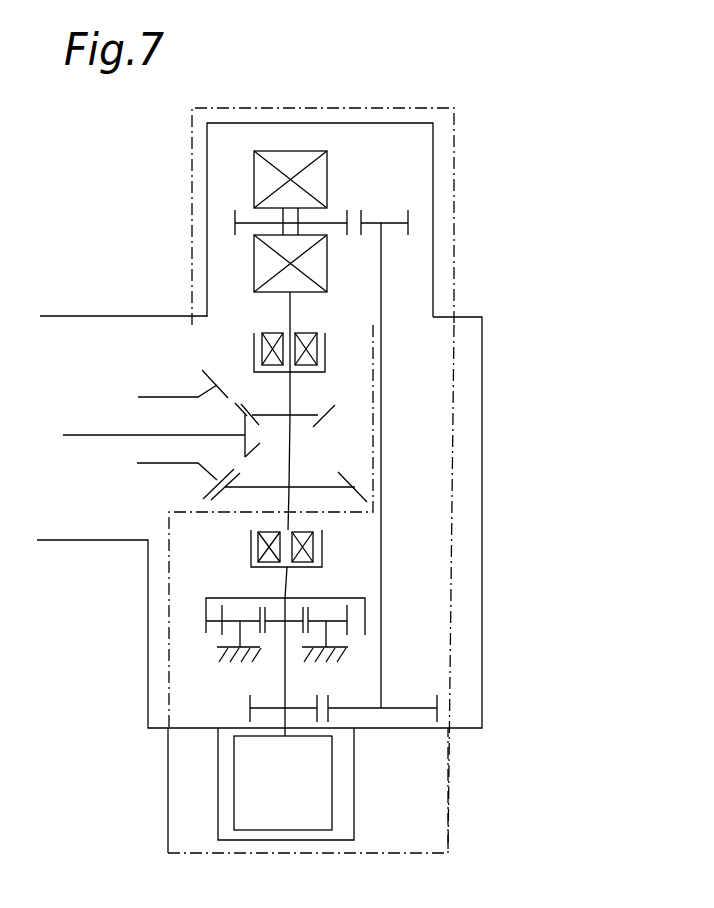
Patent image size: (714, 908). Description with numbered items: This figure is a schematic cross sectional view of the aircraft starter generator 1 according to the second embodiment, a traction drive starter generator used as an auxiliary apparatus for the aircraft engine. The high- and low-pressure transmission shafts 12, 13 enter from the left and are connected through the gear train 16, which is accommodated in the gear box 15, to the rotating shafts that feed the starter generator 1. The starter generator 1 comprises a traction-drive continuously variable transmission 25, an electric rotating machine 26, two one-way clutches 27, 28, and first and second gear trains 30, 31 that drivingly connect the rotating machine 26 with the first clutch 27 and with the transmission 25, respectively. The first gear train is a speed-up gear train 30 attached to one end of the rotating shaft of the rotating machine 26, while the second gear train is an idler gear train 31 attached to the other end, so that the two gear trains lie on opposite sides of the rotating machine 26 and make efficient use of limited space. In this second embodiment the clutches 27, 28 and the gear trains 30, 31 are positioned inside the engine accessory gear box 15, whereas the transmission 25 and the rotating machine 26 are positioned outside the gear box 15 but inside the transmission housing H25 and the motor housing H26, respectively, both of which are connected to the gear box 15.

The starter generator 1 is at (456, 246).
The high-pressure transmission shaft 12 is at (156, 395).
The low-pressure transmission shaft 13 is at (92, 433).
The gear box 15 is at (482, 375).
The gear train 16 is at (310, 449).
The traction-drive continuously variable transmission 25 is at (253, 180).
The electric rotating machine 26 is at (333, 782).
The one-way clutch 27 is at (250, 547).
The one-way clutch 28 is at (259, 336).
The speed-up gear train 30 is at (207, 617).
The idler gear train 31 is at (410, 708).
The transmission housing H25 is at (433, 150).
The motor housing H26 is at (355, 832).